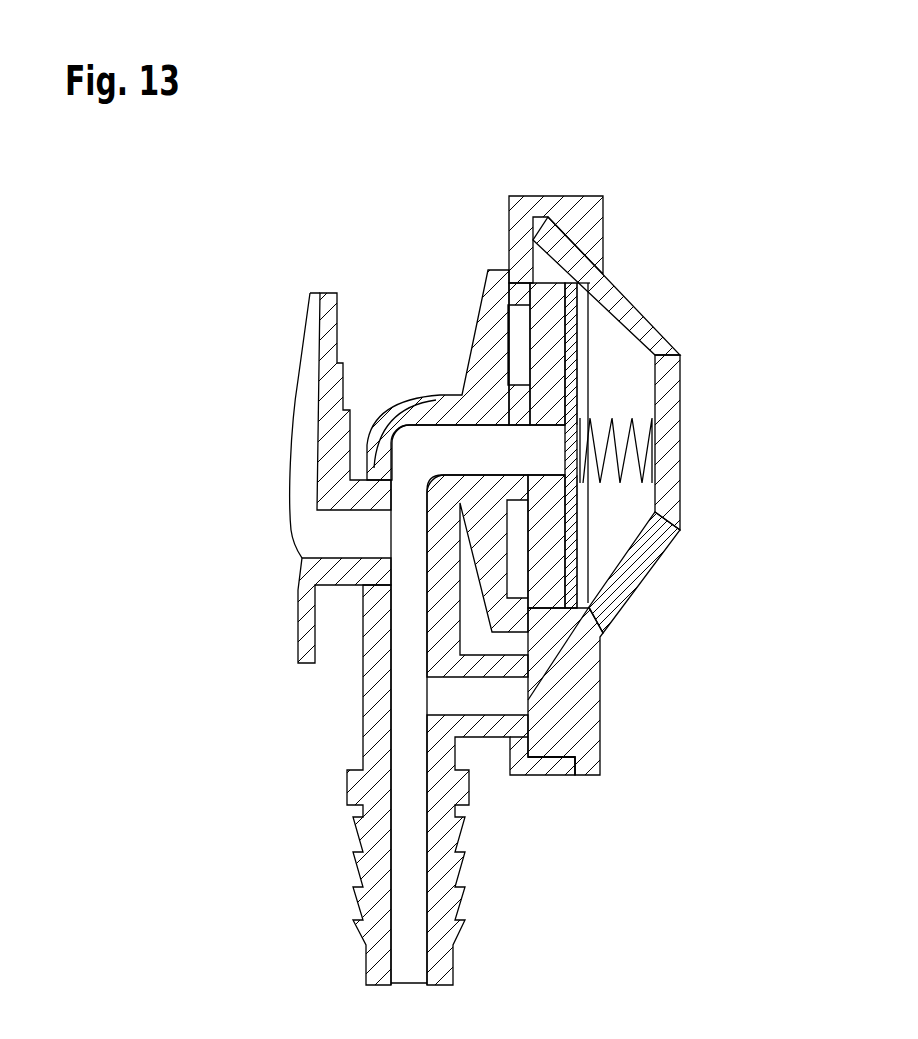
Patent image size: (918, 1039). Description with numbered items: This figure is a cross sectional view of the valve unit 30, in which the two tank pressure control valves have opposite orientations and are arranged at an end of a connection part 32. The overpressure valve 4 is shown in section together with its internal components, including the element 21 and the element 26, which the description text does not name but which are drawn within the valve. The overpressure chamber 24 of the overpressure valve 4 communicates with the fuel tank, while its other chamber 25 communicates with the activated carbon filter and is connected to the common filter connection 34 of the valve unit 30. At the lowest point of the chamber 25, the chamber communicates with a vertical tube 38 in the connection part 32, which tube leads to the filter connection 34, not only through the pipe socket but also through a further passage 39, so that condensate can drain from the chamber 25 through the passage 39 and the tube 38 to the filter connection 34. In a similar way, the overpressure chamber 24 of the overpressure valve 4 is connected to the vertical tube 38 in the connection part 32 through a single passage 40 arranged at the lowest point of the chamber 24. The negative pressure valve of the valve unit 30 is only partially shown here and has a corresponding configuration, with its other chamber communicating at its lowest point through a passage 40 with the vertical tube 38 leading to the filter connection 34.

The overpressure valve 4 is at (663, 312).
The valve plate 21 is at (570, 531).
The overpressure chamber 24 is at (520, 345).
The chamber 25 is at (622, 378).
The spring 26 is at (570, 447).
The valve unit 30 is at (382, 228).
The connection part 32 is at (350, 744).
The filter connection 34 is at (448, 925).
The vertical tube 38 is at (402, 853).
The passage 39 is at (488, 722).
The passage 40 is at (344, 543).